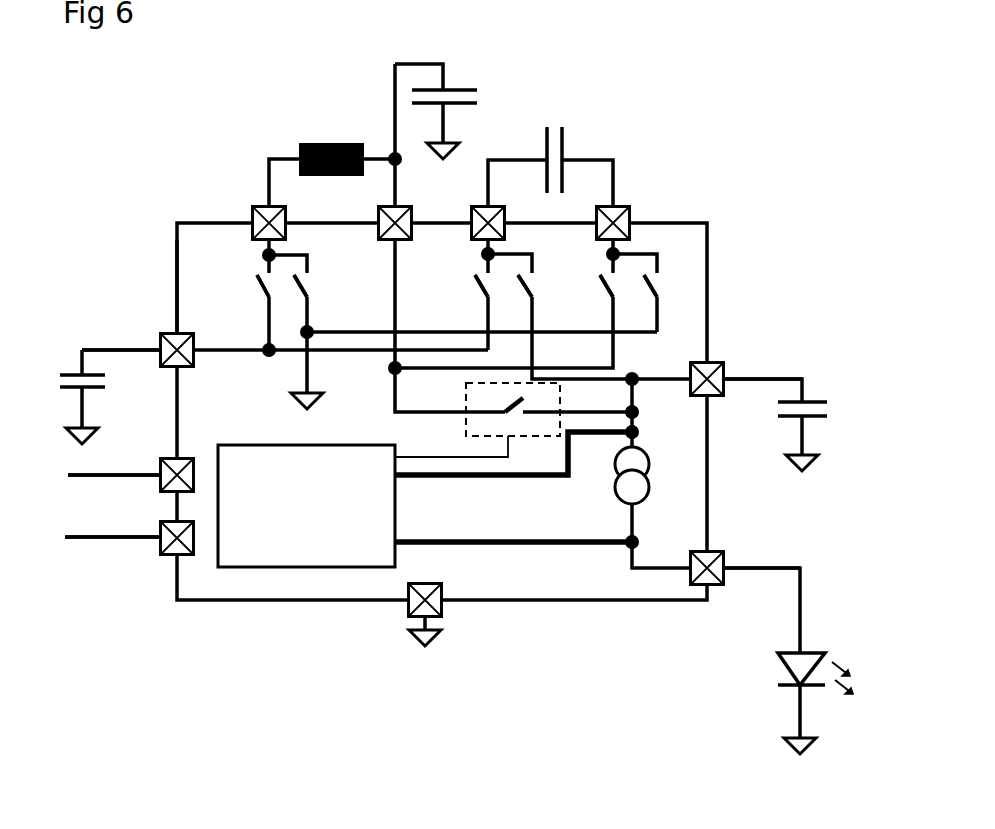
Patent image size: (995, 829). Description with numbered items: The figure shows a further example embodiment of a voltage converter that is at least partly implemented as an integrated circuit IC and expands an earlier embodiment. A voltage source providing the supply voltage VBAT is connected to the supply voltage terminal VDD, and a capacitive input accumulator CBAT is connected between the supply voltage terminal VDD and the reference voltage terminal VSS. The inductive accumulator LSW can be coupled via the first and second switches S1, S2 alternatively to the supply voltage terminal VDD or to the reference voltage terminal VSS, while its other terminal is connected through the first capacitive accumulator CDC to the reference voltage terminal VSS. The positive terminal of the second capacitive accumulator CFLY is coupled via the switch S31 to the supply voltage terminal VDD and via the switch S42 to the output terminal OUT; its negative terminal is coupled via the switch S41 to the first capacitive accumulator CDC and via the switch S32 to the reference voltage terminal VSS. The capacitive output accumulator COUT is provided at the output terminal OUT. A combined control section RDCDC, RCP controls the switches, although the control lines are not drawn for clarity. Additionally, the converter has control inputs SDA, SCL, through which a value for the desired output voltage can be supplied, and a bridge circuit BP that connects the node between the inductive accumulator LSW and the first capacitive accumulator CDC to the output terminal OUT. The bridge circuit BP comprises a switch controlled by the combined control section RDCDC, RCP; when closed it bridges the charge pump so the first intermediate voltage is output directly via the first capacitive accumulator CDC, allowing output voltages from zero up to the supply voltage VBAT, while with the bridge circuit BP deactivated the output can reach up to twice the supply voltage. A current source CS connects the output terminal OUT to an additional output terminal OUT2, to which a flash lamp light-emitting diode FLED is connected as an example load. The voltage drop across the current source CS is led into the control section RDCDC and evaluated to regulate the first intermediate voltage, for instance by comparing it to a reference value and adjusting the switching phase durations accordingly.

The integrated circuit IC is at (518, 595).
The inductive accumulator LSW is at (332, 140).
The first capacitive accumulator CDC is at (473, 86).
The second capacitive accumulator CFLY is at (565, 133).
The supply voltage terminal VDD is at (167, 333).
The supply voltage VBAT is at (113, 337).
The capacitive input accumulator CBAT is at (109, 374).
The control input SDA is at (114, 460).
The control input SCL is at (113, 523).
The first switch S1 is at (257, 283).
The second switch S2 is at (307, 289).
The switch S31 is at (477, 285).
The switch S42 is at (527, 285).
The switch S41 is at (602, 285).
The switch S32 is at (687, 282).
The bridge circuit BP is at (493, 409).
The control section RDCDC is at (306, 506).
The control section RCP is at (290, 528).
The current source CS is at (610, 483).
The output terminal OUT is at (722, 365).
The capacitive output accumulator COUT is at (787, 420).
The additional output terminal OUT2 is at (723, 558).
The flash lamp light-emitting diode FLED is at (780, 653).
The reference voltage terminal VSS is at (460, 150).